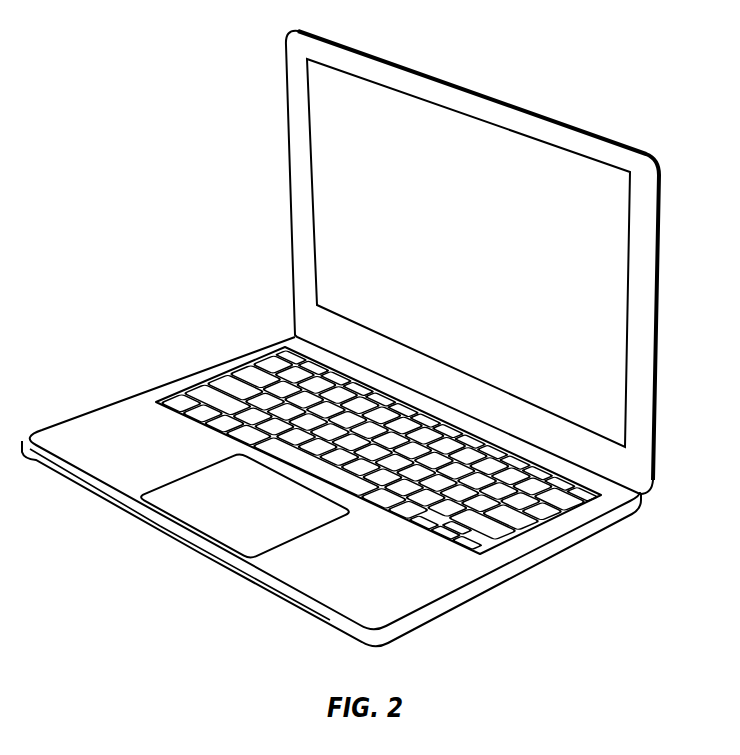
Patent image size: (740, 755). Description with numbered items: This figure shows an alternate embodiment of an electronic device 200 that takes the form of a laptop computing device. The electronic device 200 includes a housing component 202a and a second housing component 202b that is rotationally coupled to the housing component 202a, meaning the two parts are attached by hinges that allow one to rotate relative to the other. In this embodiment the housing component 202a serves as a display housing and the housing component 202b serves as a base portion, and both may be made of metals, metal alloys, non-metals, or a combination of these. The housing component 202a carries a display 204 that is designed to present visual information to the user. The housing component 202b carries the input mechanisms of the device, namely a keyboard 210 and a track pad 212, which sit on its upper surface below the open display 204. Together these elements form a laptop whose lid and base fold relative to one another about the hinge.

The electronic device 200 is at (65, 93).
The housing component 202a is at (472, 248).
The housing component 202b is at (331, 482).
The display 204 is at (487, 230).
The keyboard 210 is at (510, 545).
The track pad 212 is at (263, 510).